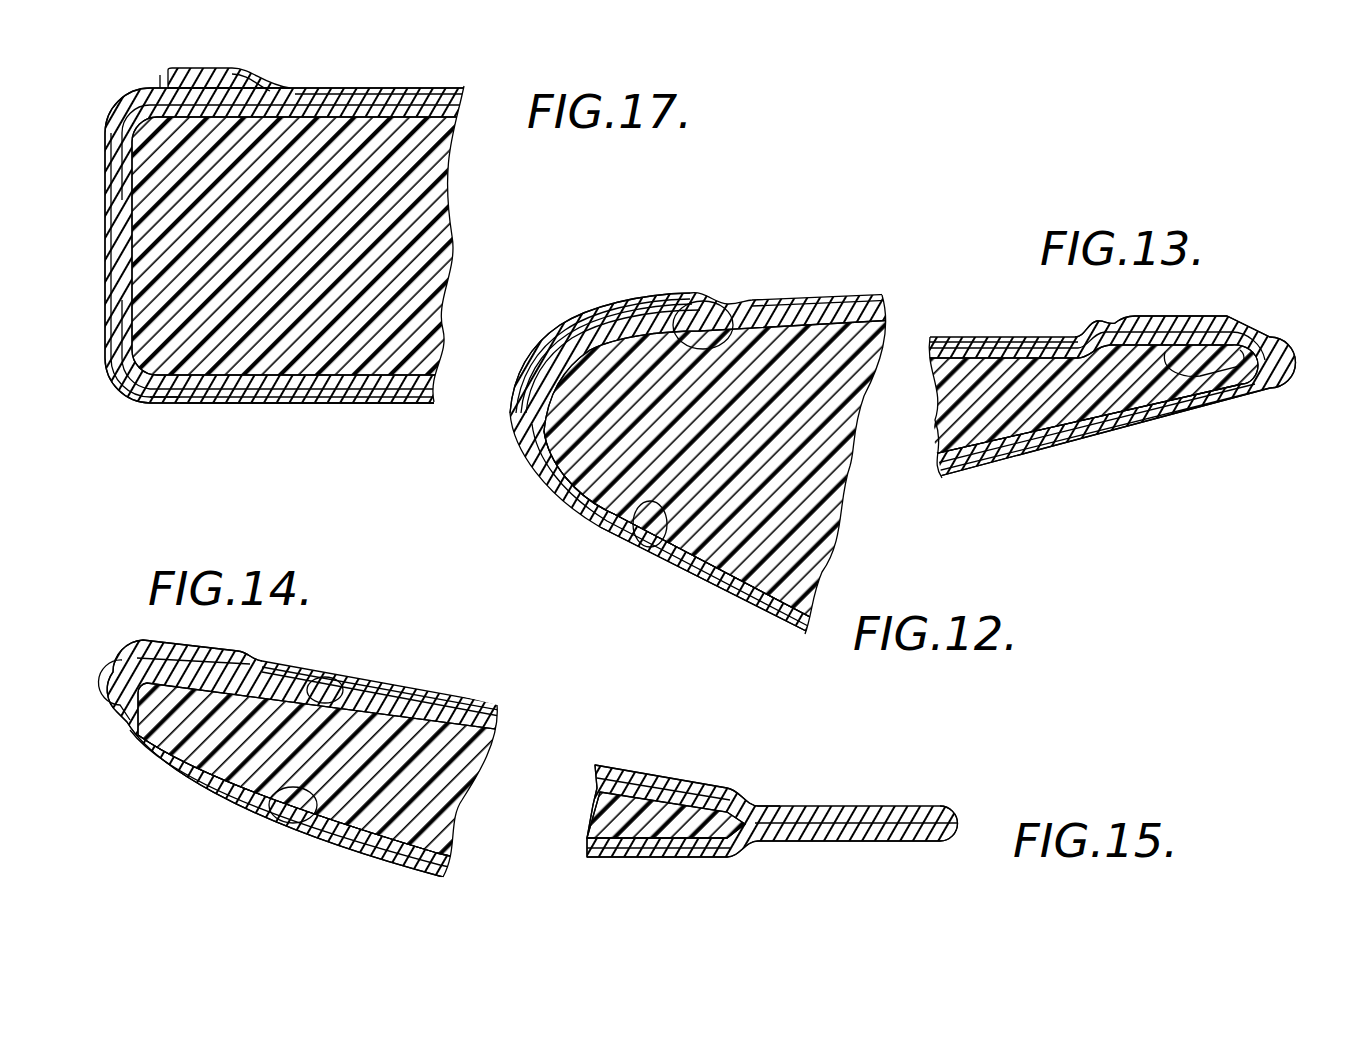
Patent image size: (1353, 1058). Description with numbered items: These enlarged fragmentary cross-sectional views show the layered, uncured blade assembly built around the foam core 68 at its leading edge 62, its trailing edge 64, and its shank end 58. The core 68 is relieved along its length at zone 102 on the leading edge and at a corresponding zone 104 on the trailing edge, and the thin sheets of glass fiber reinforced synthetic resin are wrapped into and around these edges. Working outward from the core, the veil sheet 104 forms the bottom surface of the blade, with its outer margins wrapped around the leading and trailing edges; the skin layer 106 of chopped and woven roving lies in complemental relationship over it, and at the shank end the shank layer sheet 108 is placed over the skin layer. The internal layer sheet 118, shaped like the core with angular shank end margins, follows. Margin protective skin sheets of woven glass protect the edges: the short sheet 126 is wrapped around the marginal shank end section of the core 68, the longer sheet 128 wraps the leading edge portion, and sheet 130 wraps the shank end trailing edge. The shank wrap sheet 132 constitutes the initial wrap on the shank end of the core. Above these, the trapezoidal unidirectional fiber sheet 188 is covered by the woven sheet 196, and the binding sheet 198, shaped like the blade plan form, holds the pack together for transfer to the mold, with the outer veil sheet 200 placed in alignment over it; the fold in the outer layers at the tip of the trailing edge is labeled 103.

In FIG. 17, the shank end 58 is at (105, 167).
In FIG. 12, the leading edge 62 is at (510, 400).
In FIG. 14, the leading edge 62 is at (113, 694).
In FIG. 13, the trailing edge 64 is at (1290, 368).
In FIG. 15, the trailing edge 64 is at (950, 816).
In FIG. 17, the foam core 68 is at (443, 193).
In FIG. 12, the foam core 68 is at (846, 564).
In FIG. 13, the foam core 68 is at (932, 399).
In FIG. 14, the foam core 68 is at (472, 793).
In FIG. 15, the foam core 68 is at (593, 803).
In FIG. 12, the relieved zone 102 is at (731, 302).
In FIG. 14, the relieved zone 102 is at (380, 682).
In FIG. 13, the fold 103 is at (1243, 397).
In FIG. 15, the fold 103 is at (745, 799).
In FIG. 17, the veil sheet 104 is at (210, 396).
In FIG. 12, the veil sheet 104 is at (618, 548).
In FIG. 13, the veil sheet 104 is at (1158, 430).
In FIG. 14, the veil sheet 104 is at (184, 792).
In FIG. 15, the veil sheet 104 is at (720, 861).
In FIG. 17, the skin layer 106 is at (336, 392).
In FIG. 12, the skin layer 106 is at (695, 570).
In FIG. 13, the skin layer 106 is at (1067, 452).
In FIG. 14, the skin layer 106 is at (368, 855).
In FIG. 15, the skin layer 106 is at (818, 836).
In FIG. 17, the shank layer sheet 108 is at (414, 380).
In FIG. 12, the shank layer sheet 108 is at (768, 598).
In FIG. 13, the shank layer sheet 108 is at (985, 462).
In FIG. 14, the internal layer sheet 118 is at (445, 872).
In FIG. 15, the internal layer sheet 118 is at (604, 845).
In FIG. 12, the margin protective skin sheet 126 is at (565, 470).
In FIG. 14, the margin protective skin sheet 128 is at (127, 745).
In FIG. 13, the margin protective skin sheet 130 is at (1248, 330).
In FIG. 17, the shank wrap sheet 132 is at (127, 317).
In FIG. 14, the unidirectional glass fiber sheet 188 is at (500, 713).
In FIG. 15, the unidirectional glass fiber sheet 188 is at (623, 779).
In FIG. 17, the woven glass fiber reinforced sheet 196 is at (440, 94).
In FIG. 12, the woven glass fiber reinforced sheet 196 is at (845, 296).
In FIG. 13, the woven glass fiber reinforced sheet 196 is at (1110, 320).
In FIG. 17, the binding sheet 198 is at (335, 95).
In FIG. 12, the binding sheet 198 is at (780, 298).
In FIG. 13, the binding sheet 198 is at (1003, 338).
In FIG. 14, the binding sheet 198 is at (430, 688).
In FIG. 15, the binding sheet 198 is at (852, 804).
In FIG. 17, the outer veil sheet 200 is at (255, 84).
In FIG. 12, the outer veil sheet 200 is at (566, 328).
In FIG. 13, the outer veil sheet 200 is at (953, 338).
In FIG. 14, the outer veil sheet 200 is at (242, 648).
In FIG. 15, the outer veil sheet 200 is at (665, 772).